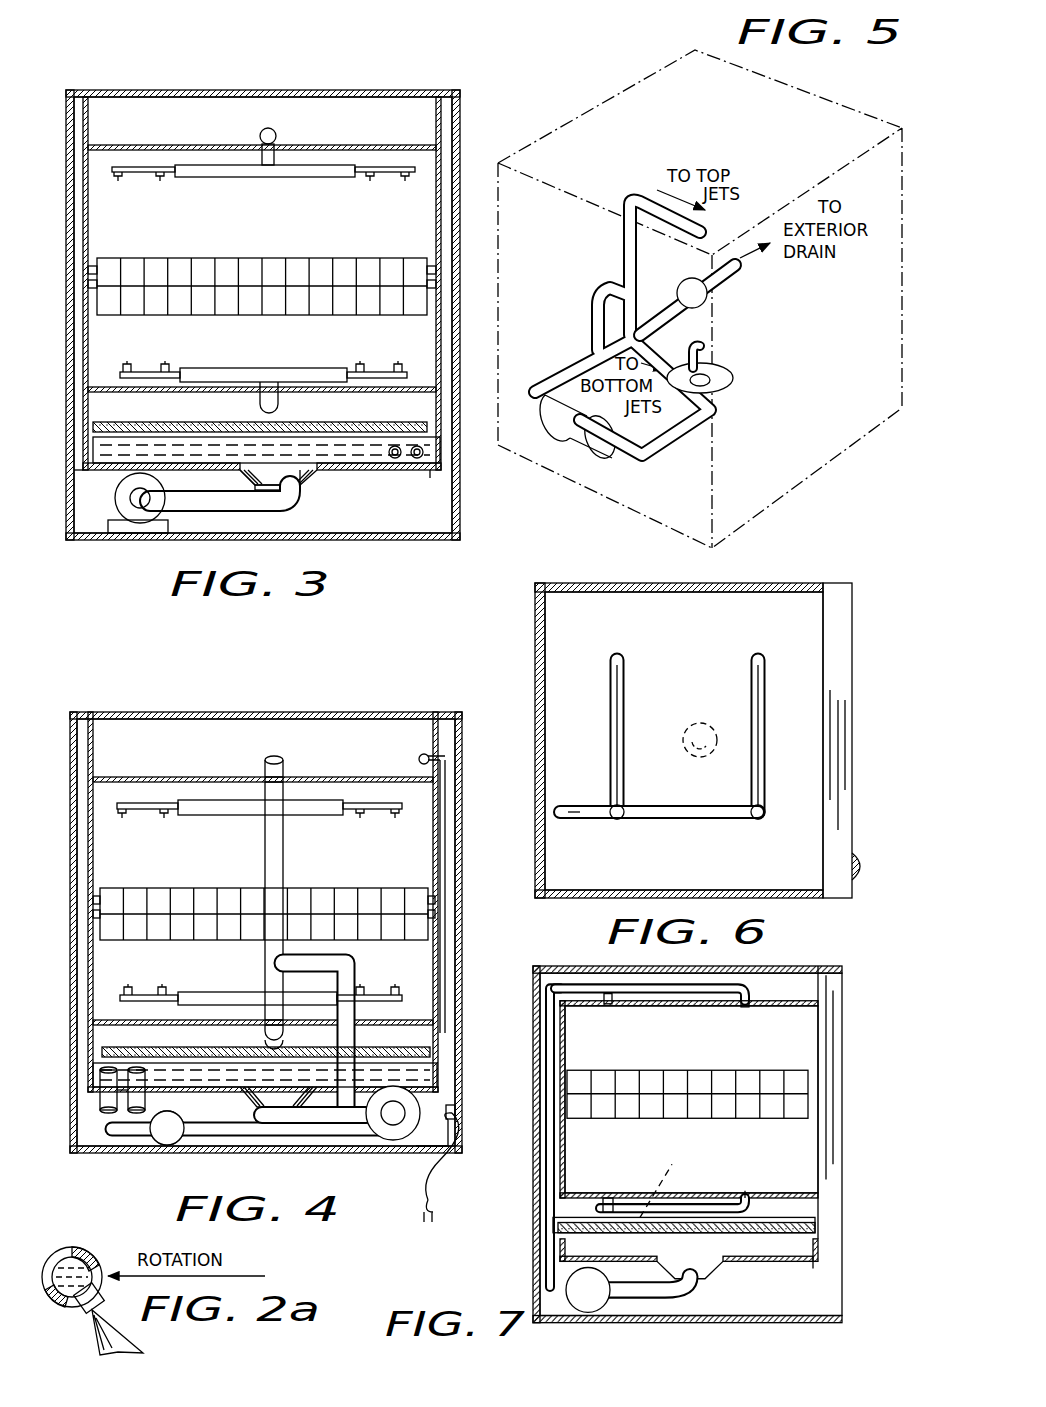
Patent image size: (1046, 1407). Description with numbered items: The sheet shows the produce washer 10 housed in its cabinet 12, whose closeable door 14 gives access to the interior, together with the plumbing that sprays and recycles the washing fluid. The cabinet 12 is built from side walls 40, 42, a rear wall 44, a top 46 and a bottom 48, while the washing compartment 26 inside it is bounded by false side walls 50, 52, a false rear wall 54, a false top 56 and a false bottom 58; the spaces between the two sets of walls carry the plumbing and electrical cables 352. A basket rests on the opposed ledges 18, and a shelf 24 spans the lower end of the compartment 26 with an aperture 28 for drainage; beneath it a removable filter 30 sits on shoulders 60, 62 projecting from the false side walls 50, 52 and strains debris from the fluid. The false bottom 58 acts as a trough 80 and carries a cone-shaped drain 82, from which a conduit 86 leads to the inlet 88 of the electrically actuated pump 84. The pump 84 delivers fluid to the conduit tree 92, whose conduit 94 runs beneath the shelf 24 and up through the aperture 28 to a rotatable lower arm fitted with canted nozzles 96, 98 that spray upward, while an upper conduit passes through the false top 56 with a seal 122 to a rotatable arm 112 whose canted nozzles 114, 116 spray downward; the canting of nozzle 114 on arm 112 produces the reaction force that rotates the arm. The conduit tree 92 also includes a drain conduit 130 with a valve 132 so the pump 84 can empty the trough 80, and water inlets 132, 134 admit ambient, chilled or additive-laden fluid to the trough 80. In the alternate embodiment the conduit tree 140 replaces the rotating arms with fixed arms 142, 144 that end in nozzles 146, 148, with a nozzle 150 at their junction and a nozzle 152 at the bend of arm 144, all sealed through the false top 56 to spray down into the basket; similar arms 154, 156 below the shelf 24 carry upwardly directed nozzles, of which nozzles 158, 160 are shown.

In FIG. 3, the produce washer 10 is at (66, 380).
In FIG. 4, the produce washer 10 is at (70, 902).
In FIG. 3, the cabinet 12 is at (66, 435).
In FIG. 5, the cabinet 12 is at (836, 94).
In FIG. 7, the cabinet 12 is at (533, 1228).
In FIG. 4, the cabinet 12 is at (70, 768).
In FIG. 7, the door 14 is at (842, 1212).
In FIG. 3, the ledge 18 is at (326, 228).
In FIG. 7, the ledge 18 is at (732, 1050).
In FIG. 4, the ledge 18 is at (356, 864).
In FIG. 3, the shelf 24 is at (262, 389).
In FIG. 7, the shelf 24 is at (790, 1162).
In FIG. 4, the shelf 24 is at (93, 1020).
In FIG. 7, the compartment 26 is at (806, 1045).
In FIG. 3, the aperture 28 is at (260, 398).
In FIG. 6, the aperture 28 is at (700, 757).
In FIG. 7, the aperture 28 is at (668, 1238).
In FIG. 4, the aperture 28 is at (285, 1032).
In FIG. 3, the filter 30 is at (192, 422).
In FIG. 7, the filter 30 is at (740, 1227).
In FIG. 4, the filter 30 is at (195, 1047).
In FIG. 3, the side wall 40 is at (66, 228).
In FIG. 6, the side wall 40 is at (786, 898).
In FIG. 3, the side wall 42 is at (460, 104).
In FIG. 6, the side wall 42 is at (750, 583).
In FIG. 4, the side wall 42 is at (88, 812).
In FIG. 6, the rear wall 44 is at (535, 680).
In FIG. 7, the rear wall 44 is at (533, 1160).
In FIG. 4, the rear wall 44 is at (462, 856).
In FIG. 3, the top 46 is at (276, 58).
In FIG. 7, the top 46 is at (580, 950).
In FIG. 4, the top 46 is at (340, 688).
In FIG. 3, the bottom 48 is at (375, 540).
In FIG. 4, the bottom 48 is at (112, 1153).
In FIG. 3, the false side wall 50 is at (88, 222).
In FIG. 4, the false side wall 50 is at (433, 858).
In FIG. 3, the false side wall 52 is at (436, 200).
In FIG. 4, the false side wall 52 is at (93, 868).
In FIG. 7, the false rear wall 54 is at (560, 1180).
In FIG. 3, the false top 56 is at (160, 145).
In FIG. 6, the false top 56 is at (670, 604).
In FIG. 7, the false top 56 is at (700, 1005).
In FIG. 4, the false top 56 is at (184, 750).
In FIG. 3, the false bottom 58 is at (335, 470).
In FIG. 4, the false bottom 58 is at (326, 1125).
In FIG. 3, the shoulder 60 is at (95, 470).
In FIG. 3, the shoulder 62 is at (440, 450).
In FIG. 3, the trough 80 is at (412, 472).
In FIG. 7, the trough 80 is at (762, 1258).
In FIG. 4, the trough 80 is at (456, 1108).
In FIG. 3, the drain 82 is at (296, 478).
In FIG. 5, the drain 82 is at (733, 378).
In FIG. 7, the drain 82 is at (702, 1272).
In FIG. 4, the drain 82 is at (282, 1110).
In FIG. 3, the pump 84 is at (135, 524).
In FIG. 5, the pump 84 is at (592, 455).
In FIG. 7, the pump 84 is at (578, 1304).
In FIG. 4, the pump 84 is at (400, 1140).
In FIG. 3, the conduit 86 is at (200, 514).
In FIG. 7, the conduit 86 is at (650, 1292).
In FIG. 3, the inlet 88 is at (290, 500).
In FIG. 5, the conduit tree 92 is at (622, 268).
In FIG. 4, the conduit tree 92 is at (263, 843).
In FIG. 3, the conduit 94 is at (245, 368).
In FIG. 4, the conduit 94 is at (248, 992).
In FIG. 3, the nozzle 96 is at (150, 364).
In FIG. 4, the nozzle 96 is at (398, 967).
In FIG. 3, the nozzle 98 is at (385, 364).
In FIG. 4, the nozzle 98 is at (152, 967).
In FIG. 3, the arm 112 is at (282, 177).
In FIG. 4, the arm 112 is at (292, 815).
In FIG. 2A, the arm 112 is at (85, 1252).
In FIG. 3, the nozzle 114 is at (120, 181).
In FIG. 4, the nozzle 114 is at (368, 818).
In FIG. 2A, the nozzle 114 is at (80, 1316).
In FIG. 3, the nozzle 116 is at (372, 181).
In FIG. 4, the nozzle 116 is at (150, 818).
In FIG. 3, the seal 122 is at (262, 140).
In FIG. 5, the drain conduit 130 is at (690, 312).
In FIG. 4, the drain conduit 130 is at (240, 1137).
In FIG. 5, the valve 132 is at (708, 296).
In FIG. 4, the valve 132 is at (100, 1100).
In FIG. 4, the water inlet 134 is at (112, 1128).
In FIG. 7, the conduit tree 140 is at (565, 1140).
In FIG. 6, the arm 142 is at (625, 730).
In FIG. 6, the arm 144 is at (680, 818).
In FIG. 7, the arm 144 is at (652, 994).
In FIG. 6, the nozzle 146 is at (620, 662).
In FIG. 6, the nozzle 148 is at (754, 662).
In FIG. 6, the nozzle 150 is at (616, 820).
In FIG. 7, the nozzle 150 is at (607, 1005).
In FIG. 6, the nozzle 152 is at (756, 820).
In FIG. 7, the nozzle 152 is at (748, 1006).
In FIG. 7, the arm 154 is at (690, 1198).
In FIG. 7, the arm 156 is at (676, 1177).
In FIG. 7, the nozzle 158 is at (613, 1194).
In FIG. 7, the nozzle 160 is at (740, 1200).
In FIG. 4, the electrical cable 352 is at (445, 940).